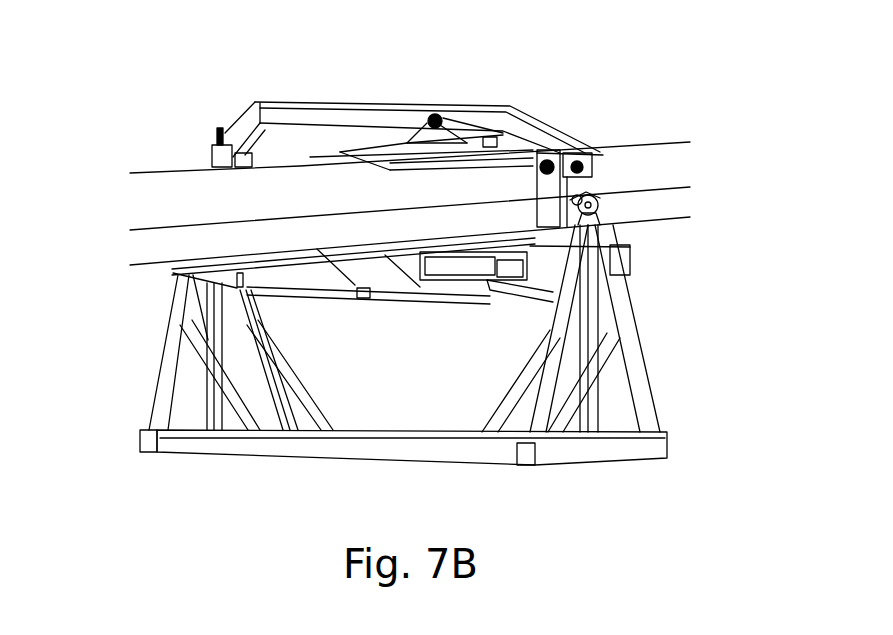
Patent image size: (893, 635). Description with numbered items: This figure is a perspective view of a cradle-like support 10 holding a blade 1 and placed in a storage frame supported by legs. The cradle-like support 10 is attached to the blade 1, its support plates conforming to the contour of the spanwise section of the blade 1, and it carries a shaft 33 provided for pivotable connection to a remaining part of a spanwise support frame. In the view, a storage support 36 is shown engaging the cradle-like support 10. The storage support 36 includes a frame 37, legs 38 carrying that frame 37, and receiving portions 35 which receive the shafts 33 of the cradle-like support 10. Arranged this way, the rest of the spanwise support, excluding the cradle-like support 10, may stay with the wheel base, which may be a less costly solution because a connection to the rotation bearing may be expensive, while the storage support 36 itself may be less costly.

The blade 1 is at (633, 145).
The cradle-like support 10 is at (457, 86).
The shaft 33 is at (598, 207).
The receiving portions 35 is at (598, 207).
The storage support 36 is at (666, 338).
The frame 37 is at (320, 453).
The legs 38 is at (168, 344).